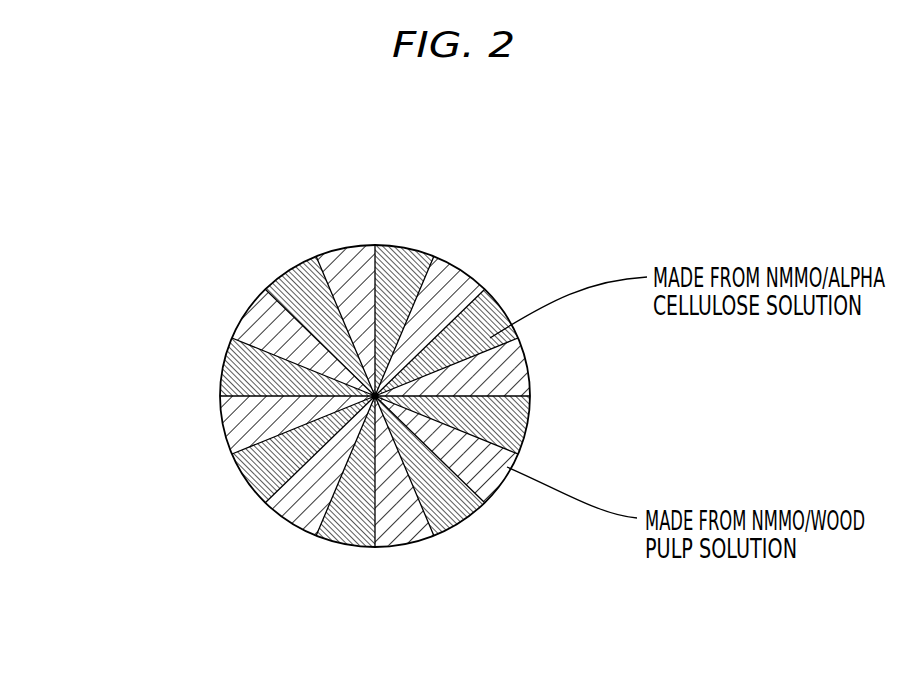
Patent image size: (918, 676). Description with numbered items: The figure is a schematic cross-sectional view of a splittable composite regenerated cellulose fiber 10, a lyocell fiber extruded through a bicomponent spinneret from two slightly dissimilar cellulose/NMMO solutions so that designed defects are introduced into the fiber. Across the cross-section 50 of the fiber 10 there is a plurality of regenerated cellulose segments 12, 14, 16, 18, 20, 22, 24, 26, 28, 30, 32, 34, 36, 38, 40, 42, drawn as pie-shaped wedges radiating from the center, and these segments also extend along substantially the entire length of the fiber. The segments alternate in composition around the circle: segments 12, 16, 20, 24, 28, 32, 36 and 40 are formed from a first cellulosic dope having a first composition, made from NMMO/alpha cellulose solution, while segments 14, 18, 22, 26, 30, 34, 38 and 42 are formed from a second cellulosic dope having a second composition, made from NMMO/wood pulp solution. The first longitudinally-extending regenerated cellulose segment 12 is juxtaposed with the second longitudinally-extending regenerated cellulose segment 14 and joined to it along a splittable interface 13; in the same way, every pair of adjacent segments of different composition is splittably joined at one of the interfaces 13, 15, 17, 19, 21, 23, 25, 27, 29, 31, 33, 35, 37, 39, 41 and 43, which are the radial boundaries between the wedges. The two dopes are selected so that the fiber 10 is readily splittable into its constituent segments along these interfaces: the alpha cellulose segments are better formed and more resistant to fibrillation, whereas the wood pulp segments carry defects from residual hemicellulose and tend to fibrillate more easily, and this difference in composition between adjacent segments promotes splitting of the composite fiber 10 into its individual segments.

The splittable composite regenerated cellulose fiber 10 is at (117, 268).
The cross-section 50 is at (228, 352).
The first longitudinally-extending regenerated cellulose segment 12 is at (400, 253).
The splittable interface 13 is at (443, 262).
The second longitudinally-extending regenerated cellulose segment 14 is at (457, 276).
The splittable interface 15 is at (478, 285).
The regenerated cellulose segment 16 is at (490, 322).
The splittable interface 17 is at (500, 347).
The regenerated cellulose segment 18 is at (505, 377).
The splittable interface 19 is at (528, 385).
The regenerated cellulose segment 20 is at (520, 432).
The splittable interface 21 is at (512, 468).
The regenerated cellulose segment 22 is at (508, 470).
The splittable interface 23 is at (490, 493).
The regenerated cellulose segment 24 is at (463, 517).
The splittable interface 25 is at (452, 525).
The regenerated cellulose segment 26 is at (403, 535).
The splittable interface 27 is at (377, 550).
The regenerated cellulose segment 28 is at (345, 533).
The splittable interface 29 is at (307, 522).
The regenerated cellulose segment 30 is at (293, 515).
The splittable interface 31 is at (272, 500).
The regenerated cellulose segment 32 is at (258, 472).
The splittable interface 33 is at (247, 445).
The regenerated cellulose segment 34 is at (247, 415).
The splittable interface 35 is at (223, 403).
The regenerated cellulose segment 36 is at (238, 370).
The splittable interface 37 is at (245, 330).
The regenerated cellulose segment 38 is at (262, 315).
The splittable interface 39 is at (280, 290).
The regenerated cellulose segment 40 is at (300, 273).
The splittable interface 41 is at (325, 267).
The regenerated cellulose segment 42 is at (353, 262).
The splittable interface 43 is at (368, 248).